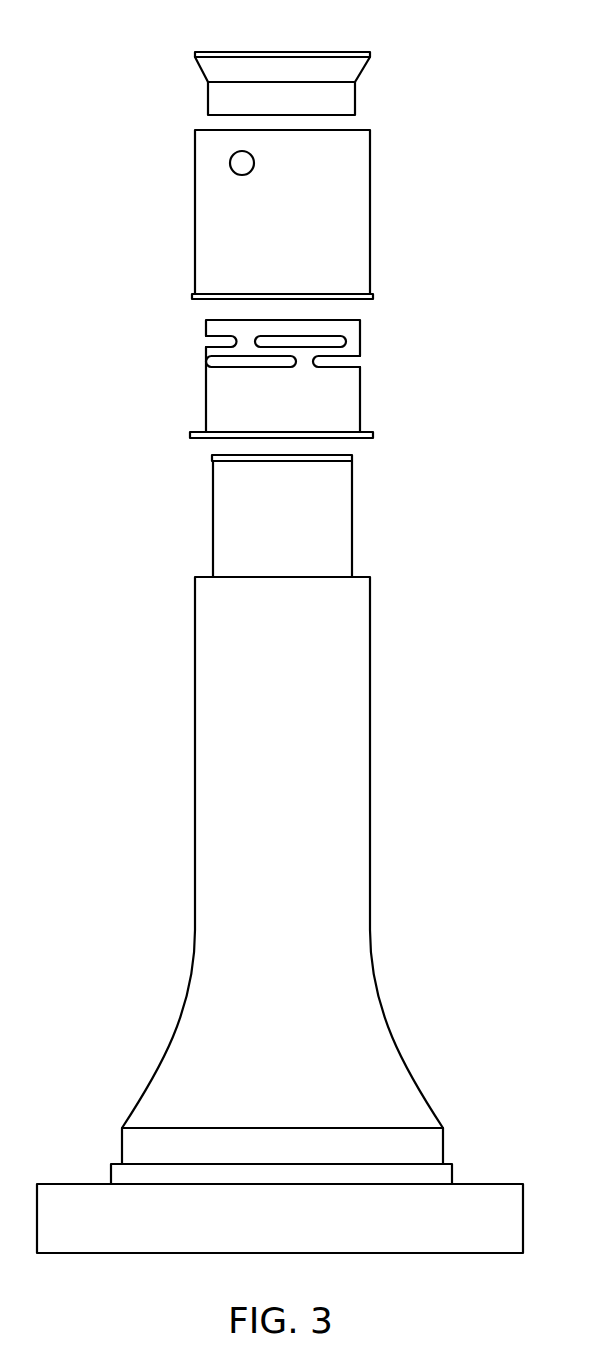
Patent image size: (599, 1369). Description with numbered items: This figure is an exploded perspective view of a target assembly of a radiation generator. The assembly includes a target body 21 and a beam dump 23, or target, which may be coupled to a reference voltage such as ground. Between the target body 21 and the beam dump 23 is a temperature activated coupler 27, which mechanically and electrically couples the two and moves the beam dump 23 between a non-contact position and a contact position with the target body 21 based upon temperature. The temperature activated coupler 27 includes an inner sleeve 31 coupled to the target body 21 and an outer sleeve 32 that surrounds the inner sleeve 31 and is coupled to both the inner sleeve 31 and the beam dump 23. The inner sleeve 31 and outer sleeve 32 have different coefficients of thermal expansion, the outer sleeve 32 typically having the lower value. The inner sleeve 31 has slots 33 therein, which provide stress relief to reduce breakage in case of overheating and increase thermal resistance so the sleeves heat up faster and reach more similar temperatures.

The target body 21 is at (195, 925).
The beam dump 23 is at (195, 122).
The temperature activated coupler 27 is at (370, 311).
The inner sleeve 31 is at (206, 400).
The outer sleeve 32 is at (195, 258).
The slots 33 is at (318, 361).